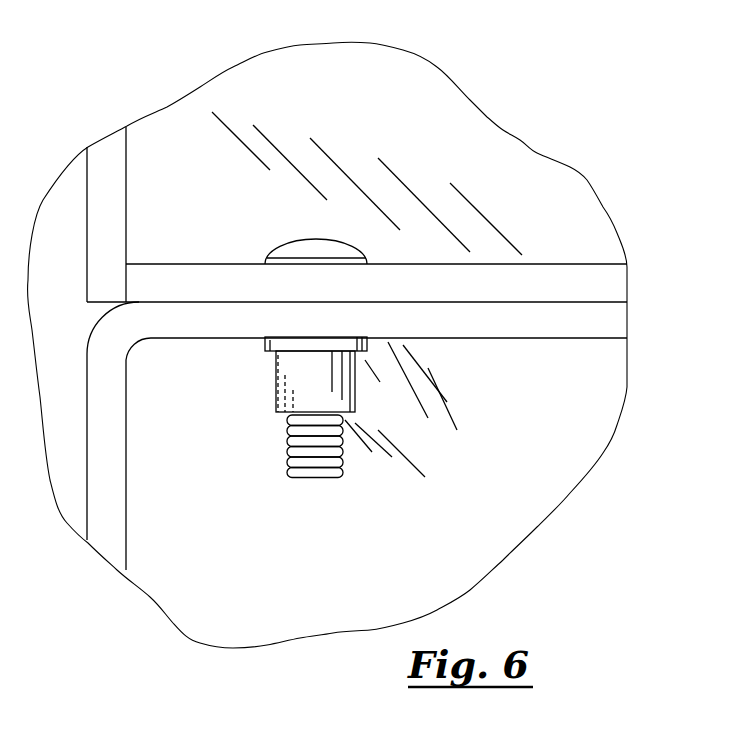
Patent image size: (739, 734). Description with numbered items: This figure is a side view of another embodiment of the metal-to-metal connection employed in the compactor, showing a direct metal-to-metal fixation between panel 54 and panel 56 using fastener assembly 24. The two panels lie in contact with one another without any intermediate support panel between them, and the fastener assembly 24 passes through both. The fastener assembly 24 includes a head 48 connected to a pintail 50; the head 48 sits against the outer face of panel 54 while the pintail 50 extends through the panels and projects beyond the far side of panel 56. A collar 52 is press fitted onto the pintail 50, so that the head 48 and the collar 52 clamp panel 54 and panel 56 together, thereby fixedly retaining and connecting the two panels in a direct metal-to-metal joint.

The fastener assembly 24 is at (352, 240).
The head 48 is at (293, 255).
The pintail 50 is at (287, 470).
The collar 52 is at (338, 394).
The panel 54 is at (575, 277).
The panel 56 is at (457, 326).